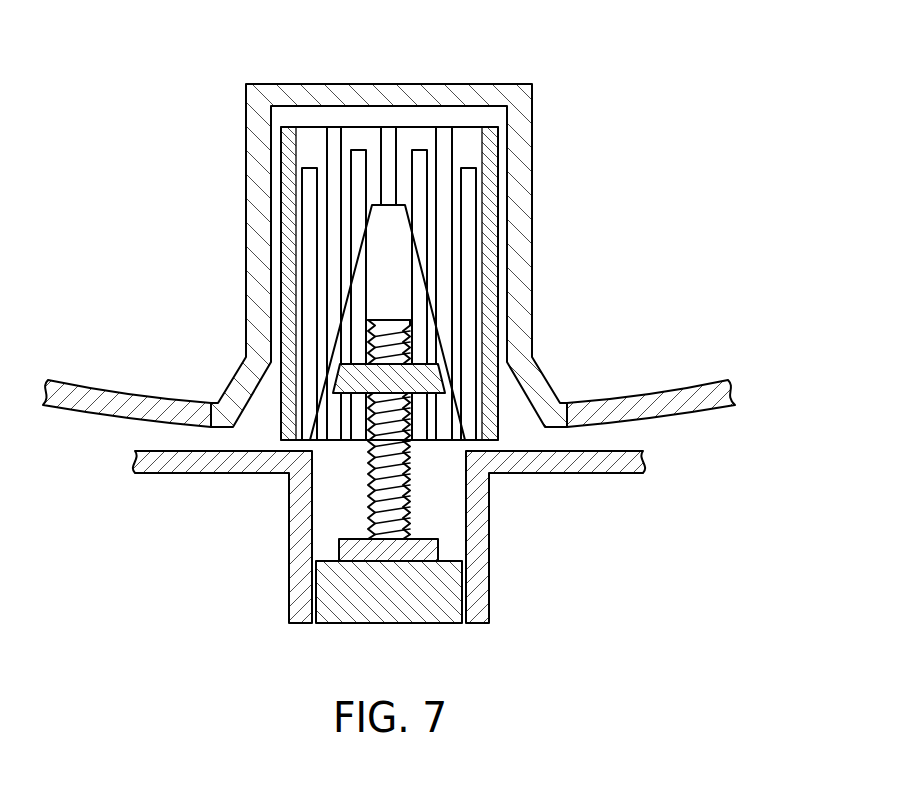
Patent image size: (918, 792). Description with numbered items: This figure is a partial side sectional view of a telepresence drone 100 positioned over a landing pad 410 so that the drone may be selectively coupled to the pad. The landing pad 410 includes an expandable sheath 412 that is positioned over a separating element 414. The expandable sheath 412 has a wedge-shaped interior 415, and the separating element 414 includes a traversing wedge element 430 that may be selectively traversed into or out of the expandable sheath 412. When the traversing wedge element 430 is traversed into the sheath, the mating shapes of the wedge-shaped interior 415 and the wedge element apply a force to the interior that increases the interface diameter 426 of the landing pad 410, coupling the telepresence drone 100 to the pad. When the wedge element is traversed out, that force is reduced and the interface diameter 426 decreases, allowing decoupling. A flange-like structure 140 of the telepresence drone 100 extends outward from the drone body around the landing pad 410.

The telepresence drone 100 is at (395, 366).
The flange 140 is at (670, 390).
The landing pad 410 is at (250, 578).
The expandable sheath 412 is at (477, 217).
The separating element 414 is at (338, 400).
The wedge-shaped interior 415 is at (410, 275).
The interface diameter 426 is at (275, 232).
The traversing wedge element 430 is at (421, 395).